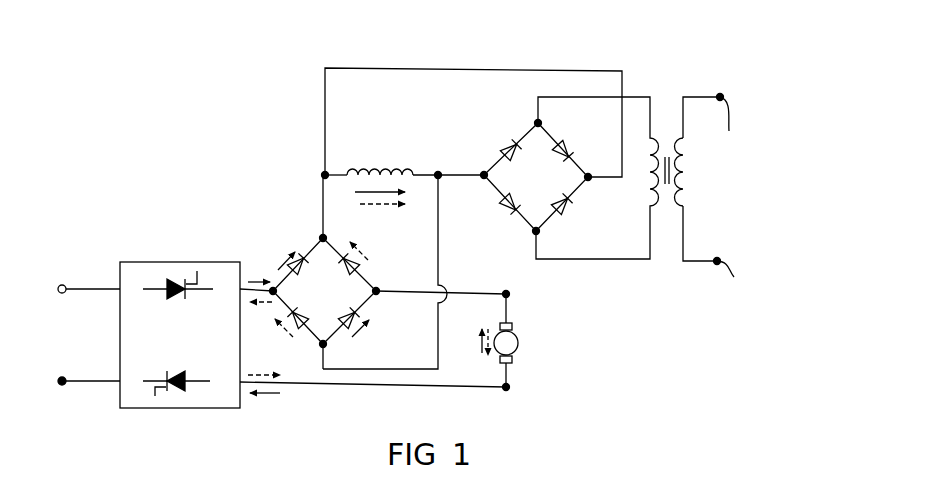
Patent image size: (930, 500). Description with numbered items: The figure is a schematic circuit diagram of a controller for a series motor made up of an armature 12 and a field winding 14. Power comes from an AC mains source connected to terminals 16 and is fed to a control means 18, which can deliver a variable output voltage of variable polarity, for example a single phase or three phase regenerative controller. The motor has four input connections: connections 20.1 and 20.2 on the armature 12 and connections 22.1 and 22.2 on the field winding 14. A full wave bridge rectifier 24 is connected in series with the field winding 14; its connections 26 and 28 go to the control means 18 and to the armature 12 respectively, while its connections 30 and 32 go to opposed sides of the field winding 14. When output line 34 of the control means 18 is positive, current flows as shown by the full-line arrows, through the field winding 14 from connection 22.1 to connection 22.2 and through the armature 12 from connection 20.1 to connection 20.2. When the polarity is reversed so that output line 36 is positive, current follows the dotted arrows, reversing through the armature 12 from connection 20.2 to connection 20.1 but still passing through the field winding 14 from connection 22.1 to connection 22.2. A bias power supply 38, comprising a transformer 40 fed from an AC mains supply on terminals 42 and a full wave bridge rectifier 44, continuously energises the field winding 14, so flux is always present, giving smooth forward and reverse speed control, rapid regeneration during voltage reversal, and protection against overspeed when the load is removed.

The armature 12 is at (518, 343).
The field winding 14 is at (363, 171).
The terminals 16 is at (62, 294).
The control means 18 is at (136, 262).
The connection 20.1 is at (506, 294).
The connection 20.2 is at (508, 387).
The connection 22.1 is at (323, 172).
The connection 22.2 is at (439, 172).
The full wave bridge rectifier 24 is at (373, 272).
The connection 26 is at (273, 296).
The connection 28 is at (377, 291).
The connection 30 is at (326, 239).
The connection 32 is at (325, 346).
The output line 34 is at (252, 288).
The output line 36 is at (300, 385).
The bias power supply 38 is at (598, 64).
The transformer 40 is at (672, 112).
The terminals 42 is at (737, 199).
The full wave bridge rectifier 44 is at (502, 130).